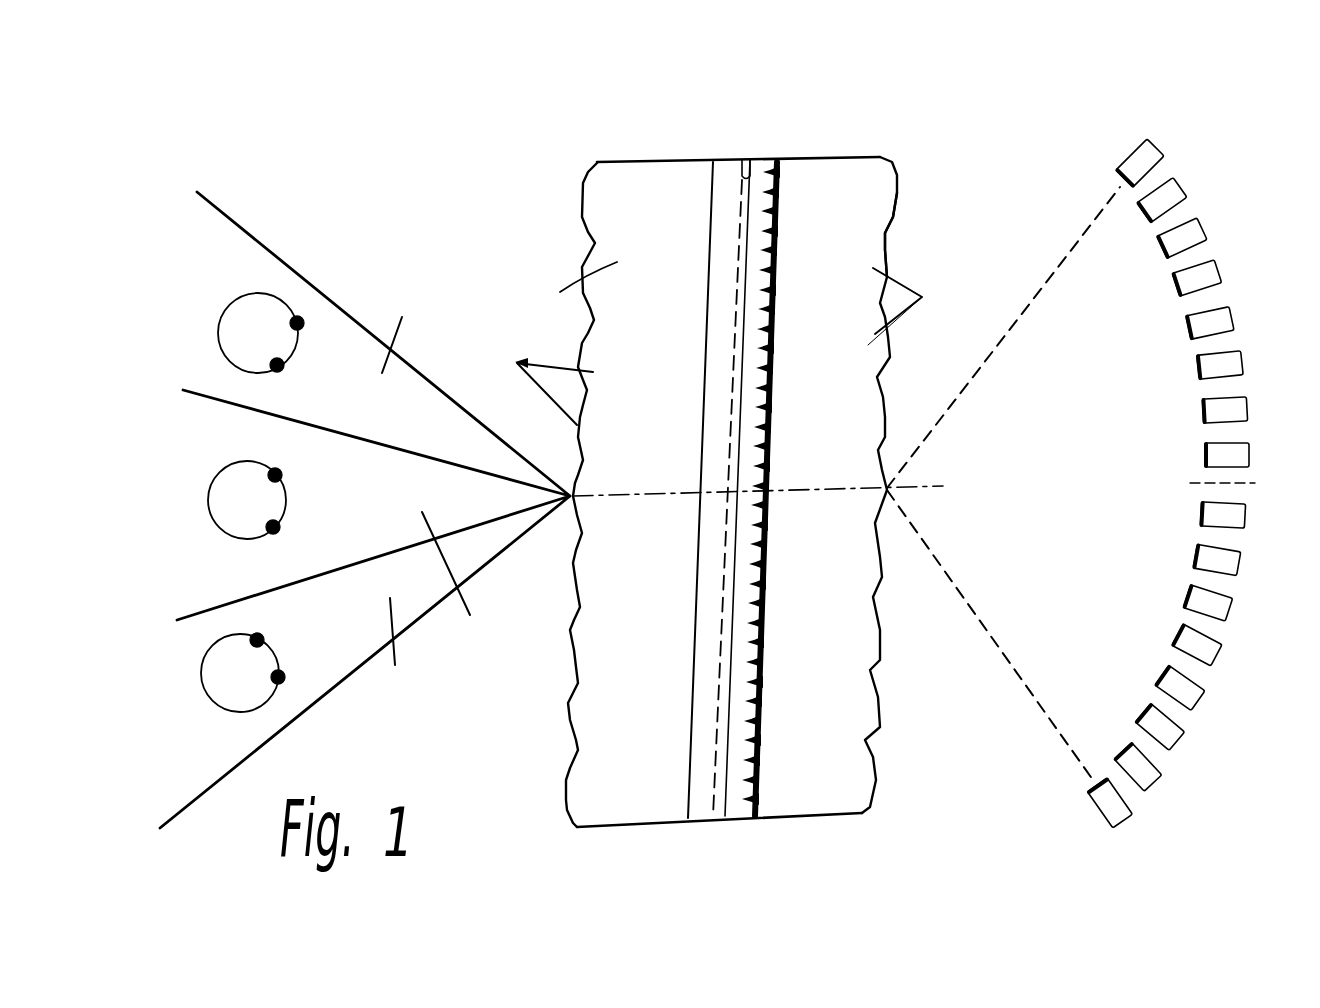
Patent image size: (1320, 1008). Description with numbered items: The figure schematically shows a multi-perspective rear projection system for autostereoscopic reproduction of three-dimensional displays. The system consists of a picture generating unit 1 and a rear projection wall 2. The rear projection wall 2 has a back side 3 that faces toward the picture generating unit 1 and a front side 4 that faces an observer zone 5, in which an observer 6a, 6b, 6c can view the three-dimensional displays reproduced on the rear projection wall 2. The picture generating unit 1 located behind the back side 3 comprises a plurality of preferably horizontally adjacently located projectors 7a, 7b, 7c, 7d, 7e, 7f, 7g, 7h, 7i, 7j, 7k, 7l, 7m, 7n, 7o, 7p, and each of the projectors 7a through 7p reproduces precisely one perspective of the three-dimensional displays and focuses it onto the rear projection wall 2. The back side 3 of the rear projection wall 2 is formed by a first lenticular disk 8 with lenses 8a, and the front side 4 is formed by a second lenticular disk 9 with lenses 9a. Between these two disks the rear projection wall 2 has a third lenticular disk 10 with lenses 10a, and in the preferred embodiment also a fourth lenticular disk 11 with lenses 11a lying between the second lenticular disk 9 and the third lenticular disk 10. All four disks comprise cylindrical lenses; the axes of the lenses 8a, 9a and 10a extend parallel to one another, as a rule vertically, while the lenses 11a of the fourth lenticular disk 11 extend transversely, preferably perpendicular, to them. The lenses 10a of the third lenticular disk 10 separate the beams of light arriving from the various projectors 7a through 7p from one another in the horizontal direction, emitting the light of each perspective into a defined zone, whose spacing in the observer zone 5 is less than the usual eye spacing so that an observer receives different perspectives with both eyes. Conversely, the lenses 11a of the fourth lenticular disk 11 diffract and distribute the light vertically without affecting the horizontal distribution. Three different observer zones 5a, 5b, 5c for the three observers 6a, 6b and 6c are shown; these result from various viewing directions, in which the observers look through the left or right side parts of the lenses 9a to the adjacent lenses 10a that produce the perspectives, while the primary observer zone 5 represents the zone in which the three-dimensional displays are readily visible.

The picture generating unit 1 is at (1229, 752).
The rear projection wall 2 is at (727, 133).
The back side 3 is at (842, 155).
The front side 4 is at (644, 147).
The observer zone 5 is at (346, 244).
The observer zone 5a is at (461, 587).
The observer zone 5b is at (400, 659).
The observer zone 5c is at (414, 322).
The observer 6a is at (220, 495).
The observer 6b is at (213, 682).
The observer 6c is at (243, 312).
The projector 7a is at (1150, 158).
The projector 7b is at (1172, 195).
The projector 7c is at (1192, 233).
The projector 7d is at (1207, 274).
The projector 7e is at (1220, 320).
The projector 7f is at (1230, 363).
The projector 7g is at (1235, 408).
The projector 7h is at (1237, 454).
The projector 7i is at (1233, 516).
The projector 7j is at (1227, 563).
The projector 7k is at (1218, 608).
The projector 7l is at (1207, 652).
The projector 7m is at (1190, 697).
The projector 7n is at (1170, 737).
The projector 7o is at (1148, 778).
The projector 7p is at (1120, 815).
The first lenticular disk 8 is at (842, 268).
The lenses 8a is at (924, 306).
The second lenticular disk 9 is at (566, 290).
The lenses 9a is at (535, 379).
The third lenticular disk 10 is at (735, 800).
The lenses 10a is at (762, 718).
The fourth lenticular disk 11 is at (703, 800).
The lenses 11a is at (748, 160).